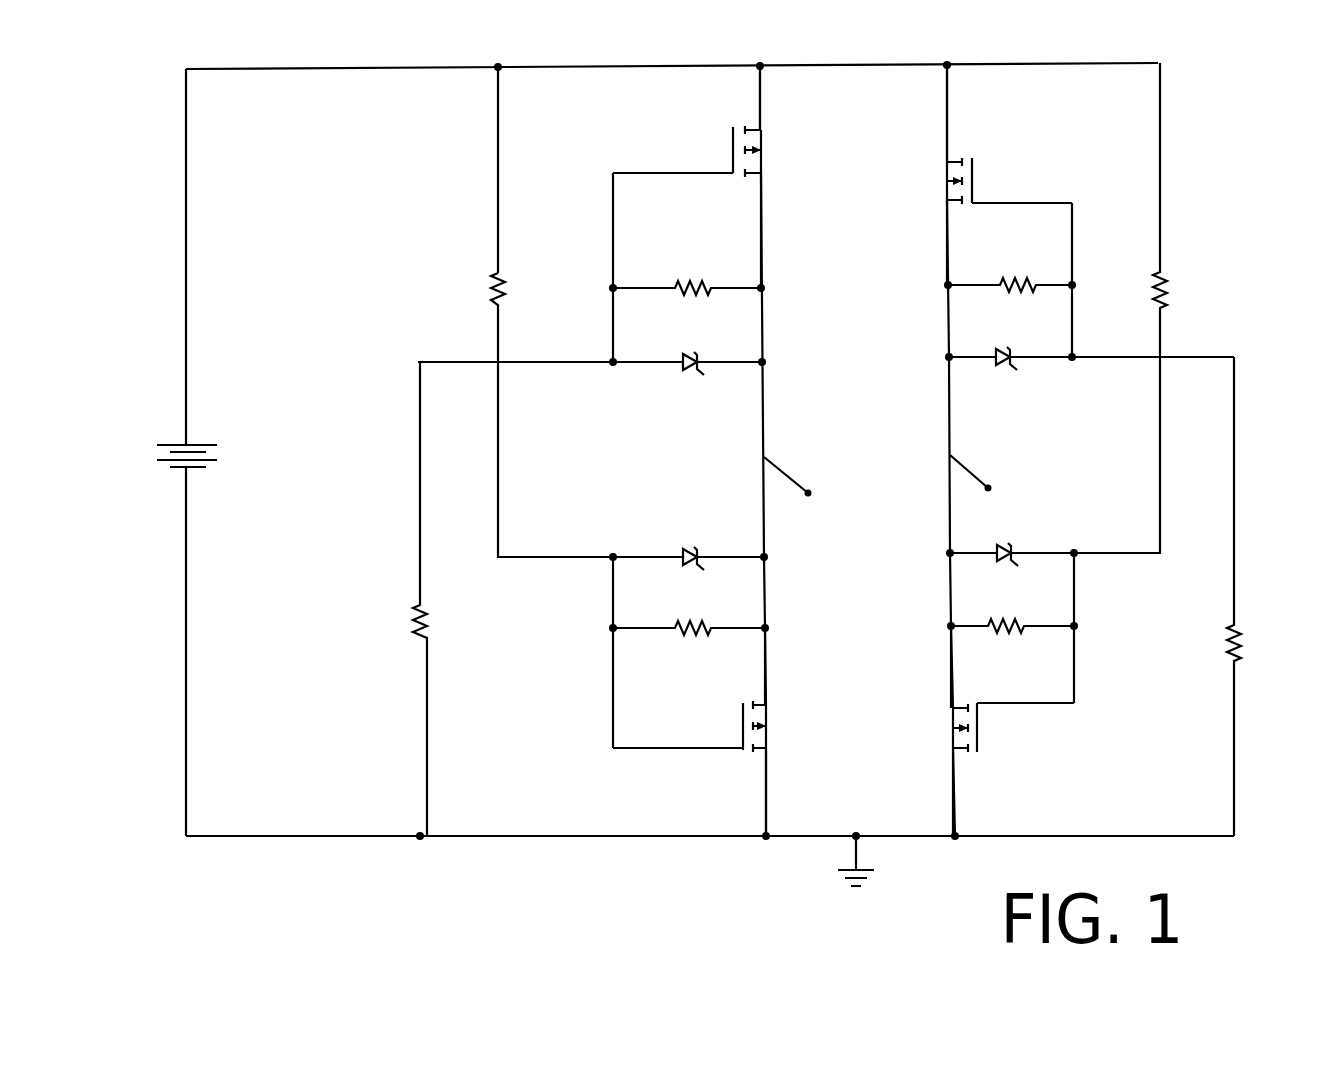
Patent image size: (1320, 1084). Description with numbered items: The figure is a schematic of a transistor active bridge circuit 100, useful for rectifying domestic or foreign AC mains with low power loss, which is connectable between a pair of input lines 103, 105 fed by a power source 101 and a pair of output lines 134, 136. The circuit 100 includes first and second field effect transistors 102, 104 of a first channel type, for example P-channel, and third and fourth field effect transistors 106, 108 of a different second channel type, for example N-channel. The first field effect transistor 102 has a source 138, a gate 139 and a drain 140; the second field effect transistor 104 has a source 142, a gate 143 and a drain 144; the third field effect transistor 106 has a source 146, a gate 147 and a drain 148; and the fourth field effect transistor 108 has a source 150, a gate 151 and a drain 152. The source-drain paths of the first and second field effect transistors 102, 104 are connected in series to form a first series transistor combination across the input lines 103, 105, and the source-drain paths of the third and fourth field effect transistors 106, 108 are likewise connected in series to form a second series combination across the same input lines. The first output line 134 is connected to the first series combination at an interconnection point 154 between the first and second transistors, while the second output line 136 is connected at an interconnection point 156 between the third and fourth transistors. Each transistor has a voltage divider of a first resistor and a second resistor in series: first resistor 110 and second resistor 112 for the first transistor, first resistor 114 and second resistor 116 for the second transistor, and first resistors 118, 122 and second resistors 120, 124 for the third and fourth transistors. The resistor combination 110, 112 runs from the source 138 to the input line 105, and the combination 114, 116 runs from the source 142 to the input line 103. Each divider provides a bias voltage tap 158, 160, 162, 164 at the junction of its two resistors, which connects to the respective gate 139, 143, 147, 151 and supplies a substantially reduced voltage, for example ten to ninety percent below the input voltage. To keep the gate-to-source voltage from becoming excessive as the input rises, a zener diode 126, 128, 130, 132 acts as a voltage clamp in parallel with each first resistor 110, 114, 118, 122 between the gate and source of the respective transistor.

The transistor active bridge circuit 100 is at (383, 324).
The power source 101 is at (160, 412).
The first field effect transistor 102 is at (714, 148).
The input line 103 is at (262, 72).
The second field effect transistor 104 is at (729, 721).
The input line 105 is at (286, 835).
The third field effect transistor 106 is at (930, 151).
The fourth field effect transistor 108 is at (937, 712).
The first resistor 110 is at (673, 288).
The second resistor 112 is at (416, 604).
The first resistor 114 is at (673, 628).
The second resistor 116 is at (495, 284).
The first resistor 118 is at (1020, 283).
The second resistor 120 is at (1240, 626).
The first resistor 122 is at (1003, 622).
The second resistor 124 is at (1165, 272).
The zener diode 126 is at (688, 357).
The zener diode 128 is at (688, 553).
The zener diode 130 is at (1002, 355).
The zener diode 132 is at (990, 551).
The output line 134 is at (784, 470).
The output line 136 is at (974, 472).
The source 138 is at (764, 191).
The gate 139 is at (718, 177).
The drain 140 is at (762, 128).
The source 142 is at (766, 698).
The gate 143 is at (722, 751).
The drain 144 is at (767, 760).
The source 146 is at (947, 213).
The gate 147 is at (992, 203).
The drain 148 is at (948, 143).
The source 150 is at (949, 687).
The gate 151 is at (995, 703).
The drain 152 is at (953, 763).
The interconnection point 154 is at (792, 406).
The interconnection point 156 is at (930, 426).
The bias voltage tap 158 is at (605, 284).
The bias voltage tap 160 is at (599, 638).
The bias voltage tap 162 is at (1078, 278).
The bias voltage tap 164 is at (1095, 627).